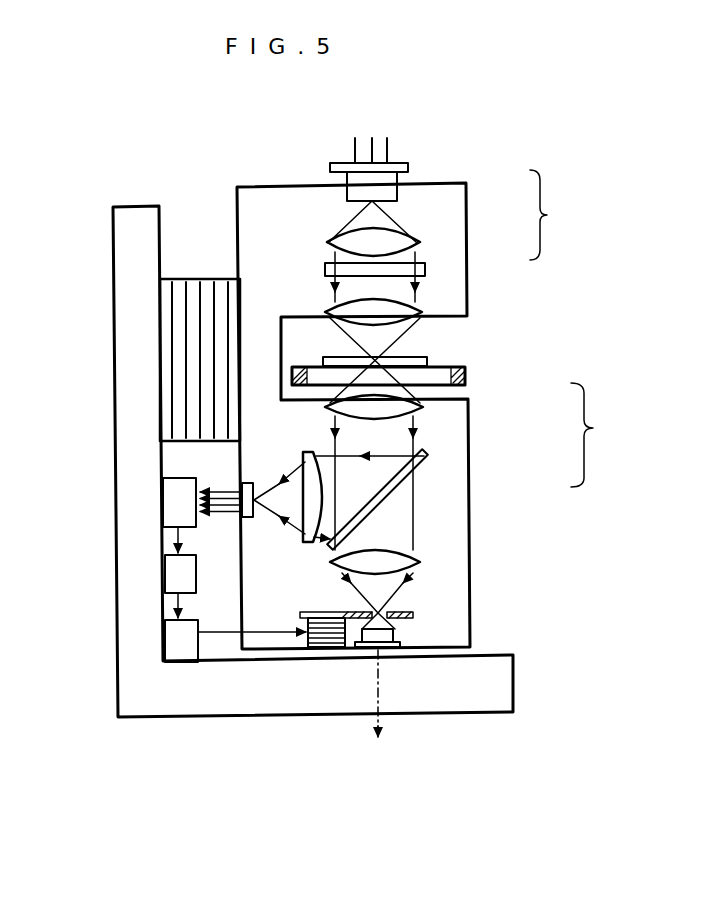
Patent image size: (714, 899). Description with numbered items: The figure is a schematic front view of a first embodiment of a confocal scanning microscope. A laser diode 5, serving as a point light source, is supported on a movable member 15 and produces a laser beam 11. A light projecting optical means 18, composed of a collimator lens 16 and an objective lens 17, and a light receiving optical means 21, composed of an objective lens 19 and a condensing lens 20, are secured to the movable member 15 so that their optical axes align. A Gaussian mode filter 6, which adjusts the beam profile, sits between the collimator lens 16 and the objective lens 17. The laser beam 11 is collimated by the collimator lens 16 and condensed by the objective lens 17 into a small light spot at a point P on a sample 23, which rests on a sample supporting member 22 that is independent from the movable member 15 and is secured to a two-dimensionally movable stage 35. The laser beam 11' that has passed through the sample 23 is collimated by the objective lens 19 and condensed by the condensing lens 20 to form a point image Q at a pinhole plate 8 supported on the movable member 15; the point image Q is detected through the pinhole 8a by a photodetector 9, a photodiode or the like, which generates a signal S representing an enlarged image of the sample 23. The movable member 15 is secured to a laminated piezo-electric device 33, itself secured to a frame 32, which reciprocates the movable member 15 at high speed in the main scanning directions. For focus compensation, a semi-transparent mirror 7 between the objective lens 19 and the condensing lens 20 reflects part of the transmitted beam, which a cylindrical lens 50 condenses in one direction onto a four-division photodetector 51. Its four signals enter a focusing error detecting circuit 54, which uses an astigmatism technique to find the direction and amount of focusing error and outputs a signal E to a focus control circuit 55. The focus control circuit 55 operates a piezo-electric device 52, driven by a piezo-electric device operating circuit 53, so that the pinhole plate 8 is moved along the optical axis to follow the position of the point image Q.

The laser diode 5 is at (385, 180).
The movable member 15 is at (263, 186).
The laser beam 11 is at (345, 221).
The collimator lens 16 is at (418, 240).
The objective lens 17 is at (418, 303).
The light projecting optical means 18 is at (557, 215).
The Gaussian mode filter 6 is at (325, 269).
The point P is at (372, 361).
The sample 23 is at (427, 358).
The two-dimensionally movable stage 35 is at (468, 369).
The sample supporting member 22 is at (323, 385).
The objective lens 19 is at (424, 407).
The condensing lens 20 is at (416, 559).
The light receiving optical means 21 is at (600, 435).
The semi-transparent mirror 7 is at (426, 451).
The laser beam 11' is at (420, 483).
The cylindrical lens 50 is at (308, 542).
The 4-division photodetector 51 is at (250, 483).
The focusing error detecting circuit 54 is at (173, 495).
The signal E is at (170, 537).
The focus control circuit 55 is at (176, 577).
The piezo-electric device operating circuit 53 is at (178, 638).
The point image Q is at (383, 612).
The pinhole 8a is at (368, 603).
The pinhole plate 8 is at (422, 609).
The piezo-electric device 52 is at (321, 647).
The photodetector 9 is at (398, 634).
The signal S is at (377, 710).
The frame 32 is at (113, 240).
The laminated piezo-electric device 33 is at (178, 308).